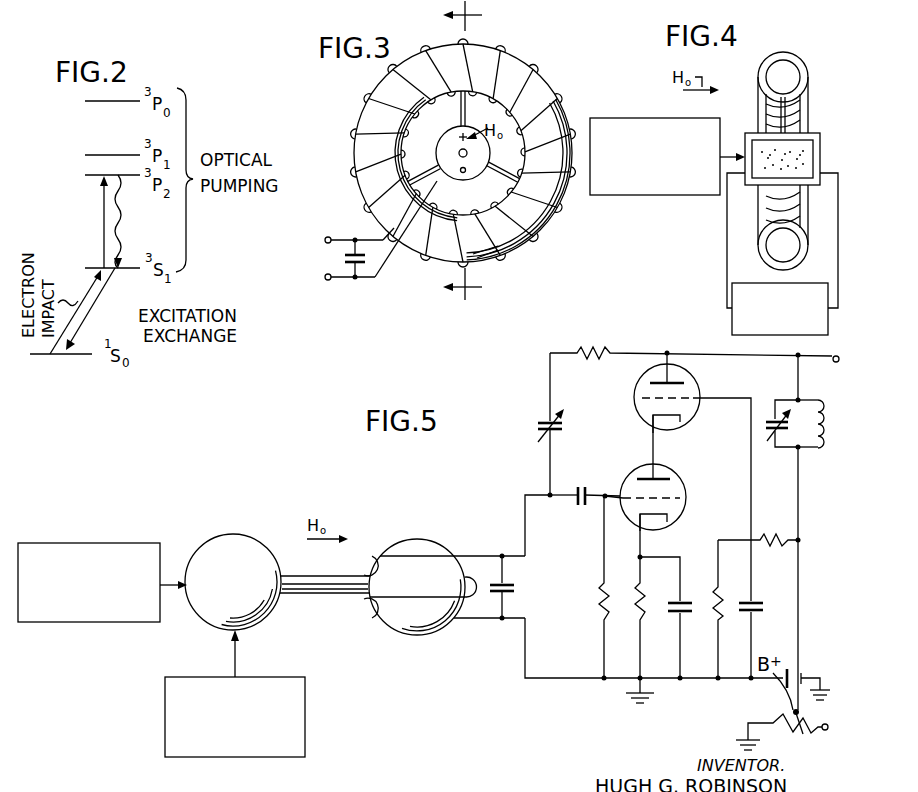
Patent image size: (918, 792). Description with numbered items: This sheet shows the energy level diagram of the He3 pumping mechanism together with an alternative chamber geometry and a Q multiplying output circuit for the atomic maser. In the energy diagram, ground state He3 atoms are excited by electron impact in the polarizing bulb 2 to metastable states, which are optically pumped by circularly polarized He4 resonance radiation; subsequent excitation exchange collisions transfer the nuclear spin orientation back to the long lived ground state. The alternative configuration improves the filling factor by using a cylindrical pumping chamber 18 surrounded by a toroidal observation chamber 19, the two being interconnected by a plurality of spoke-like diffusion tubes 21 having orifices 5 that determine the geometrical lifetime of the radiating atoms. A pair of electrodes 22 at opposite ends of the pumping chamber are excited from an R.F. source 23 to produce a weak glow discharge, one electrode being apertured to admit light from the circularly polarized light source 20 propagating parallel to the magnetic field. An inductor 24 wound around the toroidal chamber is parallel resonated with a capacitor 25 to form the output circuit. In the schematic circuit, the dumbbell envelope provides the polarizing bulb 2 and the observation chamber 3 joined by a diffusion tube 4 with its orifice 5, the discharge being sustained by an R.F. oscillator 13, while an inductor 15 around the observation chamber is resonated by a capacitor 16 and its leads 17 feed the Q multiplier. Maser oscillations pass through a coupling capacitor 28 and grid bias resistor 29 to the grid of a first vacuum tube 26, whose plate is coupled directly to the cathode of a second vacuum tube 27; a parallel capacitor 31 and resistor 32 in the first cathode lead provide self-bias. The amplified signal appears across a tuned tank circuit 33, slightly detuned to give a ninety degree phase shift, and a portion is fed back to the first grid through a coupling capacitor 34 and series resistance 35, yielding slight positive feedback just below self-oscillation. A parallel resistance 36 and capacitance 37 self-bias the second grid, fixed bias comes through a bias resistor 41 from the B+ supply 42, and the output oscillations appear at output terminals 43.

In FIG. 5, the polarizing bulb 2 is at (226, 590).
In FIG. 5, the observation chamber 3 is at (423, 586).
In FIG. 3, the diffusion tube 4 is at (474, 153).
In FIG. 5, the diffusion tube 4 is at (328, 594).
In FIG. 5, the orifice 5 is at (366, 585).
In FIG. 5, the R.F. oscillator 13 is at (243, 757).
In FIG. 5, the inductor 15 is at (398, 556).
In FIG. 5, the capacitor 16 is at (514, 591).
In FIG. 5, the leads 17 is at (501, 553).
In FIG. 3, the cylindrical pumping chamber 18 is at (473, 177).
In FIG. 4, the cylindrical pumping chamber 18 is at (766, 131).
In FIG. 3, the toroidal observation chamber 19 is at (505, 66).
In FIG. 4, the toroidal observation chamber 19 is at (787, 54).
In FIG. 4, the circularly polarized resonance radiation source 20 is at (657, 116).
In FIG. 5, the circularly polarized resonance radiation source 20 is at (125, 622).
In FIG. 3, the spoke-like diffusion tubes 21 is at (460, 108).
In FIG. 3, the electrodes 22 is at (456, 166).
In FIG. 4, the electrodes 22 is at (740, 181).
In FIG. 4, the R.F. source 23 is at (732, 322).
In FIG. 3, the inductor 24 is at (548, 92).
In FIG. 4, the inductor 24 is at (762, 107).
In FIG. 3, the capacitor 25 is at (342, 256).
In FIG. 5, the first vacuum tube 26 is at (692, 467).
In FIG. 5, the second vacuum tube 27 is at (705, 371).
In FIG. 5, the coupling capacitor 28 is at (578, 490).
In FIG. 5, the grid bias resistor 29 is at (599, 617).
In FIG. 5, the capacitor 31 is at (675, 615).
In FIG. 5, the resistor 32 is at (638, 617).
In FIG. 5, the tuned tank circuit 33 is at (816, 437).
In FIG. 5, the coupling capacitor 34 is at (540, 431).
In FIG. 5, the series resistance 35 is at (594, 352).
In FIG. 5, the resistance 36 is at (717, 617).
In FIG. 5, the capacitance 37 is at (750, 614).
In FIG. 5, the bias resistor 41 is at (770, 536).
In FIG. 5, the B+ supply 42 is at (788, 719).
In FIG. 5, the output terminals 43 is at (835, 363).